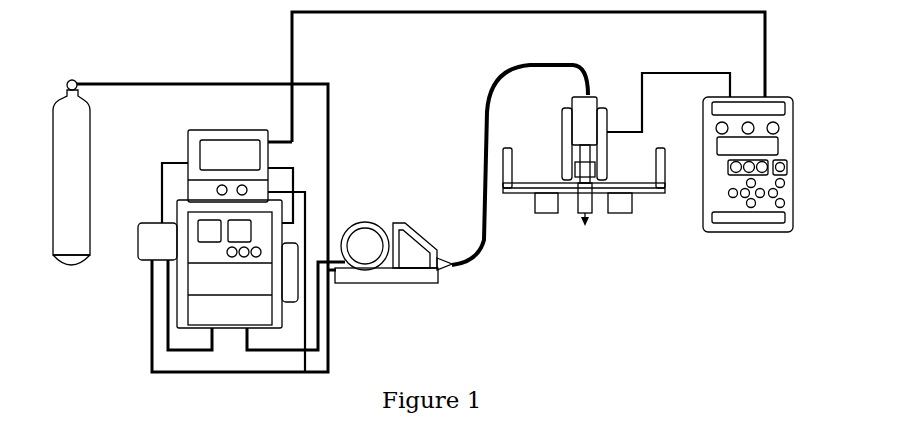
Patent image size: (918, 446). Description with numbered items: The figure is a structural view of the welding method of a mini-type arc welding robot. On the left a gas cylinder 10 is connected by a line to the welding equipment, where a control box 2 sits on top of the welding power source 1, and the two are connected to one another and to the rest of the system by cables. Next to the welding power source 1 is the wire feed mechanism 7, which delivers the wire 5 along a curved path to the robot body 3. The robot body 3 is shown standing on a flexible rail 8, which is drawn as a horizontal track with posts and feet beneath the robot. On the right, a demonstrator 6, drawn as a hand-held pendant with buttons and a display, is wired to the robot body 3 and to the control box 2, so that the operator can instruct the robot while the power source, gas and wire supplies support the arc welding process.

The welding power source 1 is at (218, 264).
The control box 2 is at (228, 166).
The robot body 3 is at (604, 98).
The wire 5 is at (482, 167).
The demonstrator 6 is at (748, 175).
The wire feed mechanism 7 is at (393, 263).
The flexible rail 8 is at (585, 216).
The gas cylinder 10 is at (84, 172).